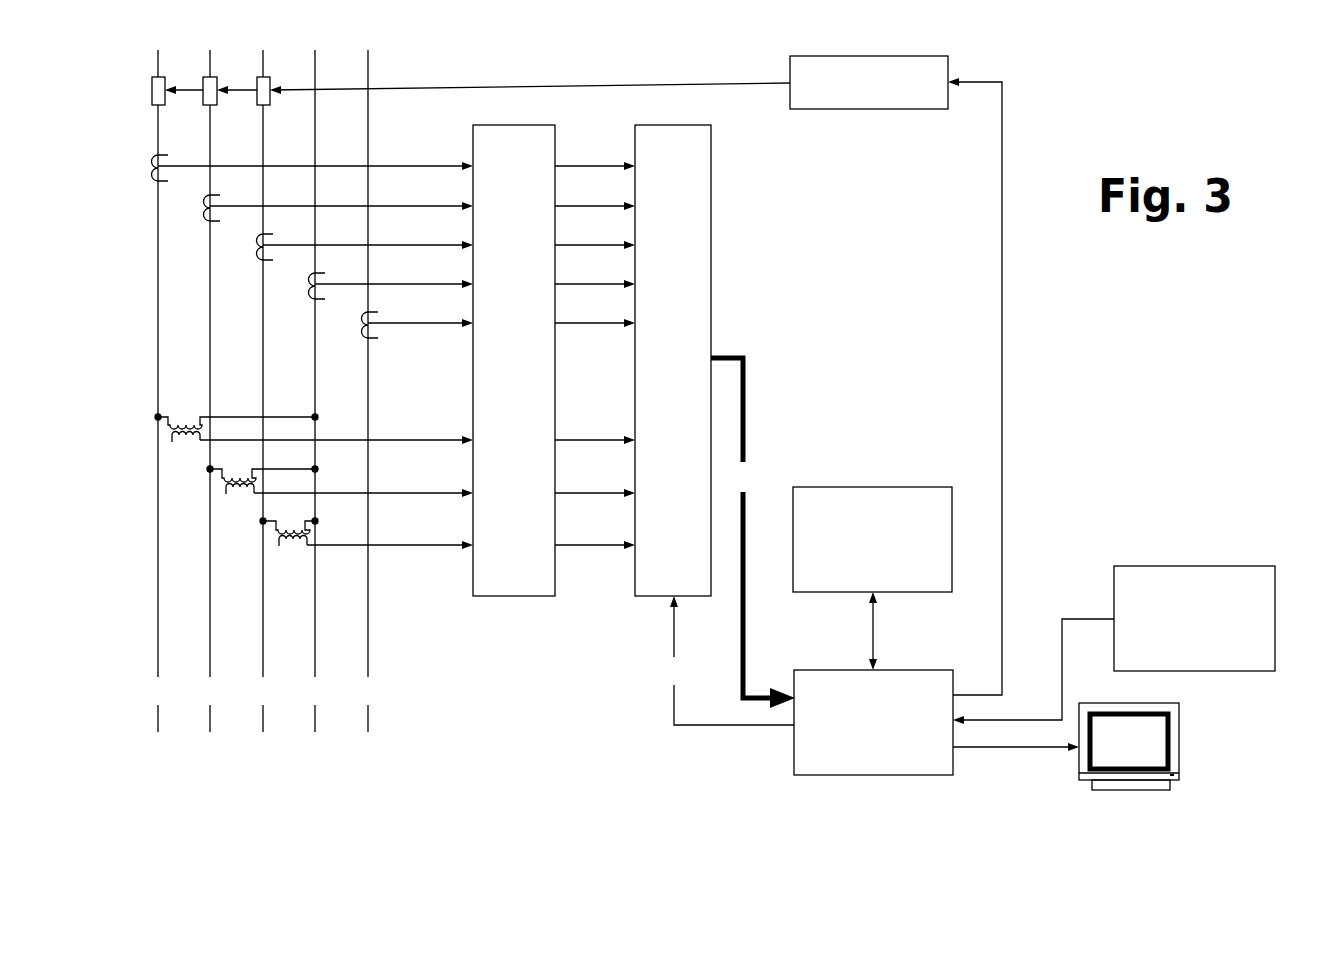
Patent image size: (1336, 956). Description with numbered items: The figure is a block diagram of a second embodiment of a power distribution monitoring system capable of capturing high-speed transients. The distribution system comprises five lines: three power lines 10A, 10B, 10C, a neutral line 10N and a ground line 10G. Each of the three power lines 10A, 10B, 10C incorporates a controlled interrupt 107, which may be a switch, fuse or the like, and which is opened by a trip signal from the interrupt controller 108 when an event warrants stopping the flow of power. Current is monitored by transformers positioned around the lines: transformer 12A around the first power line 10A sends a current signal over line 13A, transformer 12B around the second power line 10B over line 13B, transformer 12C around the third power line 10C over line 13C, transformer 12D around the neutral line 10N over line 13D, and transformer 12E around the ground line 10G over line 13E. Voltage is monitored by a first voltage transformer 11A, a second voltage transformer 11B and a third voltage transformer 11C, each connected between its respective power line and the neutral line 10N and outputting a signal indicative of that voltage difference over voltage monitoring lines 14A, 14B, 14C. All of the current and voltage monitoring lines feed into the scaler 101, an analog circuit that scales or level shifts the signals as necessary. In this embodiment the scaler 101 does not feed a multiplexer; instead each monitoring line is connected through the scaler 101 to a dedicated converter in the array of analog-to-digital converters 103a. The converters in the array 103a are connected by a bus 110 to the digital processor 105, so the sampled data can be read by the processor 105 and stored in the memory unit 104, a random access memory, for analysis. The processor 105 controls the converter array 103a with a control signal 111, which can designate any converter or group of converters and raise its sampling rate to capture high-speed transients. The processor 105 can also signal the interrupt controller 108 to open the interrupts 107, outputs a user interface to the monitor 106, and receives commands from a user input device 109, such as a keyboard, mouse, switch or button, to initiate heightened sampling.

The first power line 10A is at (158, 391).
The second power line 10B is at (209, 391).
The third power line 10C is at (264, 391).
The neutral line 10N is at (318, 391).
The ground line 10G is at (372, 391).
The interrupt 107 is at (263, 88).
The transformer 12A is at (144, 168).
The transformer 12B is at (196, 208).
The transformer 12C is at (248, 247).
The transformer 12D is at (300, 286).
The transformer 12E is at (354, 325).
The line 13A is at (315, 160).
The line 13B is at (341, 200).
The line 13C is at (368, 239).
The line 13D is at (394, 278).
The line 13E is at (420, 317).
The first voltage transformer 11A is at (236, 442).
The second voltage transformer 11B is at (262, 493).
The third voltage transformer 11C is at (289, 545).
The voltage monitoring line 14A is at (336, 434).
The voltage monitoring line 14B is at (363, 487).
The voltage monitoring line 14C is at (390, 539).
The scaler 101 is at (514, 360).
The array of analog-to-digital converters 103a is at (673, 360).
The bus 110 is at (753, 533).
The control signal 111 is at (729, 660).
The interrupt controller 108 is at (896, 375).
The memory unit 104 is at (872, 578).
The digital processor 105 is at (873, 722).
The user input device 109 is at (1114, 645).
The monitor 106 is at (1066, 756).